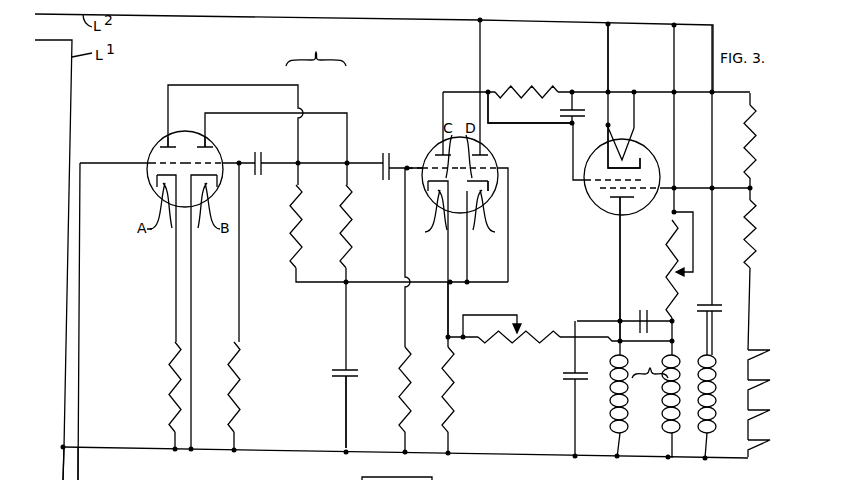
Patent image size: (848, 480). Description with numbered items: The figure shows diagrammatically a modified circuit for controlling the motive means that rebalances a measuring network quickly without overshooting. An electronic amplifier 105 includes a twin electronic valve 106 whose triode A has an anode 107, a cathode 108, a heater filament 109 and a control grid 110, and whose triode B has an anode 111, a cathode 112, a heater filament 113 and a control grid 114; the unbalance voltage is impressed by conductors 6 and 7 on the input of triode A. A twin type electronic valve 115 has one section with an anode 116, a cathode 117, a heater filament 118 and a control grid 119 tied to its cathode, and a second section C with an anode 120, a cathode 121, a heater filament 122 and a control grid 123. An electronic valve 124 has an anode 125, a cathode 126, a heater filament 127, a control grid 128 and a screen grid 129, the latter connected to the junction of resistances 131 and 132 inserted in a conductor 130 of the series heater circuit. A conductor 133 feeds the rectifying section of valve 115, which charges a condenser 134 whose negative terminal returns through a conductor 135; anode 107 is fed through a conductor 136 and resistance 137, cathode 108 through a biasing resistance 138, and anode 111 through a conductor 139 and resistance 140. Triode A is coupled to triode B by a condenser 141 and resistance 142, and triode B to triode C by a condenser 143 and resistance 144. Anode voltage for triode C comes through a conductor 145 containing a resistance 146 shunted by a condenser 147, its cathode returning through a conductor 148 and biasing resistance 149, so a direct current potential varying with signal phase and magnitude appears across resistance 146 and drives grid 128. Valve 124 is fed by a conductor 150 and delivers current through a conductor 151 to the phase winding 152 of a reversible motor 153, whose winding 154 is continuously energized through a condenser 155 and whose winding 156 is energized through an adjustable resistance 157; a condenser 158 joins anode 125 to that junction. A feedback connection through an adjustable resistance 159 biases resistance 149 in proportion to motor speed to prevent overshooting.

The electronic amplifier 105 is at (316, 50).
The electronic valve 106 is at (193, 124).
The anode 107 is at (163, 145).
The cathode 108 is at (162, 176).
The heater filament 109 is at (168, 190).
The control grid 110 is at (163, 160).
The anode 111 is at (210, 145).
The cathode 112 is at (222, 176).
The heater filament 113 is at (206, 197).
The control grid 114 is at (207, 162).
The twin type electronic valve 115 is at (482, 192).
The anode 116 is at (484, 147).
The cathode 117 is at (498, 178).
The heater filament 118 is at (478, 226).
The control grid 119 is at (490, 162).
The anode 120 is at (440, 140).
The cathode 121 is at (436, 195).
The heater filament 122 is at (438, 228).
The control grid 123 is at (432, 163).
The electronic valve 124 is at (585, 158).
The anode 125 is at (615, 205).
The cathode 126 is at (640, 170).
The heater filament 127 is at (630, 150).
The control grid 128 is at (600, 180).
The screen grid 129 is at (602, 190).
The conductor 130 is at (750, 305).
The resistance 131 is at (756, 236).
The resistance 132 is at (757, 144).
The conductor 133 is at (478, 43).
The condenser 134 is at (330, 374).
The conductor 135 is at (342, 412).
The conductor 136 is at (227, 84).
The resistance 137 is at (290, 232).
The biasing resistance 138 is at (168, 390).
The conductor 139 is at (254, 112).
The resistance 140 is at (340, 233).
The condenser 141 is at (262, 152).
The resistance 142 is at (241, 392).
The condenser 143 is at (383, 180).
The resistance 144 is at (398, 397).
The conductor 145 is at (596, 90).
The resistance 146 is at (534, 89).
The condenser 147 is at (558, 114).
The conductor 148 is at (448, 323).
The biasing resistance 149 is at (456, 397).
The conductor 150 is at (609, 47).
The conductor 151 is at (620, 272).
The phase winding 152 is at (612, 428).
The reversible motor 153 is at (650, 363).
The winding 154 is at (700, 428).
The condenser 155 is at (724, 310).
The winding 156 is at (662, 428).
The adjustable resistance 157 is at (668, 238).
The condenser 158 is at (642, 310).
The adjustable resistance 159 is at (500, 345).
The conductor 6 is at (79, 470).
The conductor 7 is at (62, 470).